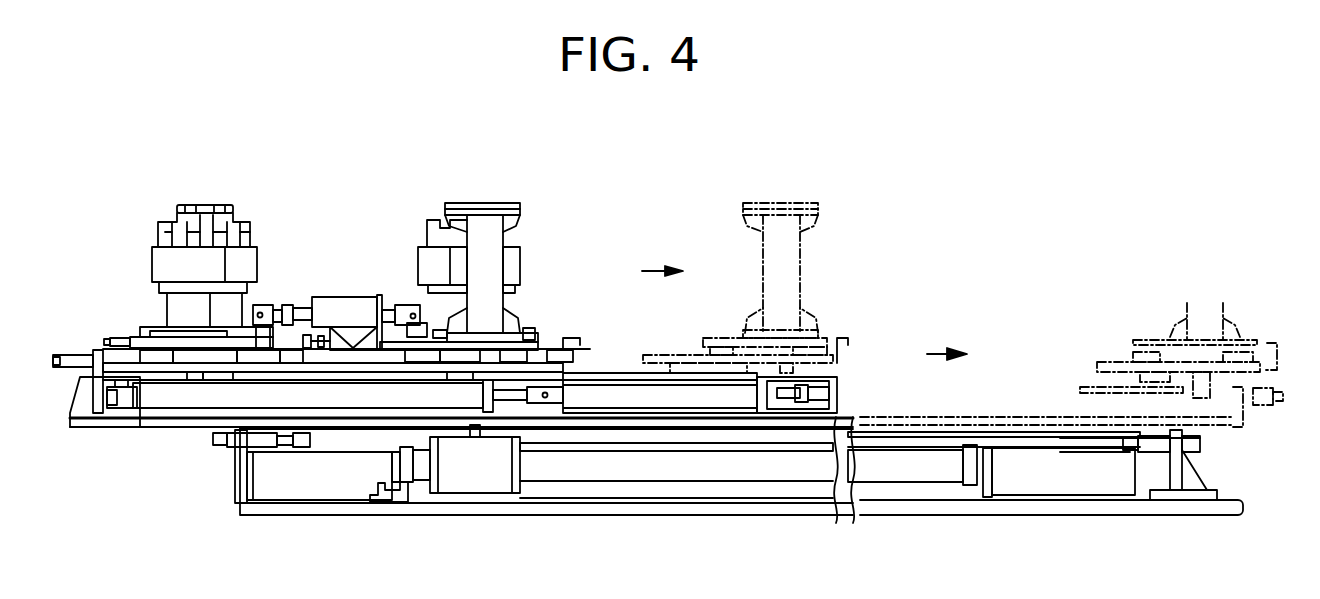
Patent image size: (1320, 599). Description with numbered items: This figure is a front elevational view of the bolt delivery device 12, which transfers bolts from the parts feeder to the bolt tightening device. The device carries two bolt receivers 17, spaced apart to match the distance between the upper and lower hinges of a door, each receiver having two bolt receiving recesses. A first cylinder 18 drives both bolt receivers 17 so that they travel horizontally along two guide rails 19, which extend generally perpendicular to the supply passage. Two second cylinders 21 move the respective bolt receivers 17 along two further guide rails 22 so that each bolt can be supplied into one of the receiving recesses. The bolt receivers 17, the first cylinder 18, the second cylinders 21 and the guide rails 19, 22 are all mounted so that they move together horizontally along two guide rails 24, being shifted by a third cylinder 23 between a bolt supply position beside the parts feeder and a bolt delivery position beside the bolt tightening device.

The bolt delivery device 12 is at (906, 237).
The bolt receiver 17 is at (212, 205).
The first cylinder 18 is at (198, 397).
The guide rail 19 is at (627, 373).
The second cylinder 21 is at (348, 307).
The guide rail 22 is at (288, 349).
The third cylinder 23 is at (588, 472).
The guide rail 24 is at (1003, 443).